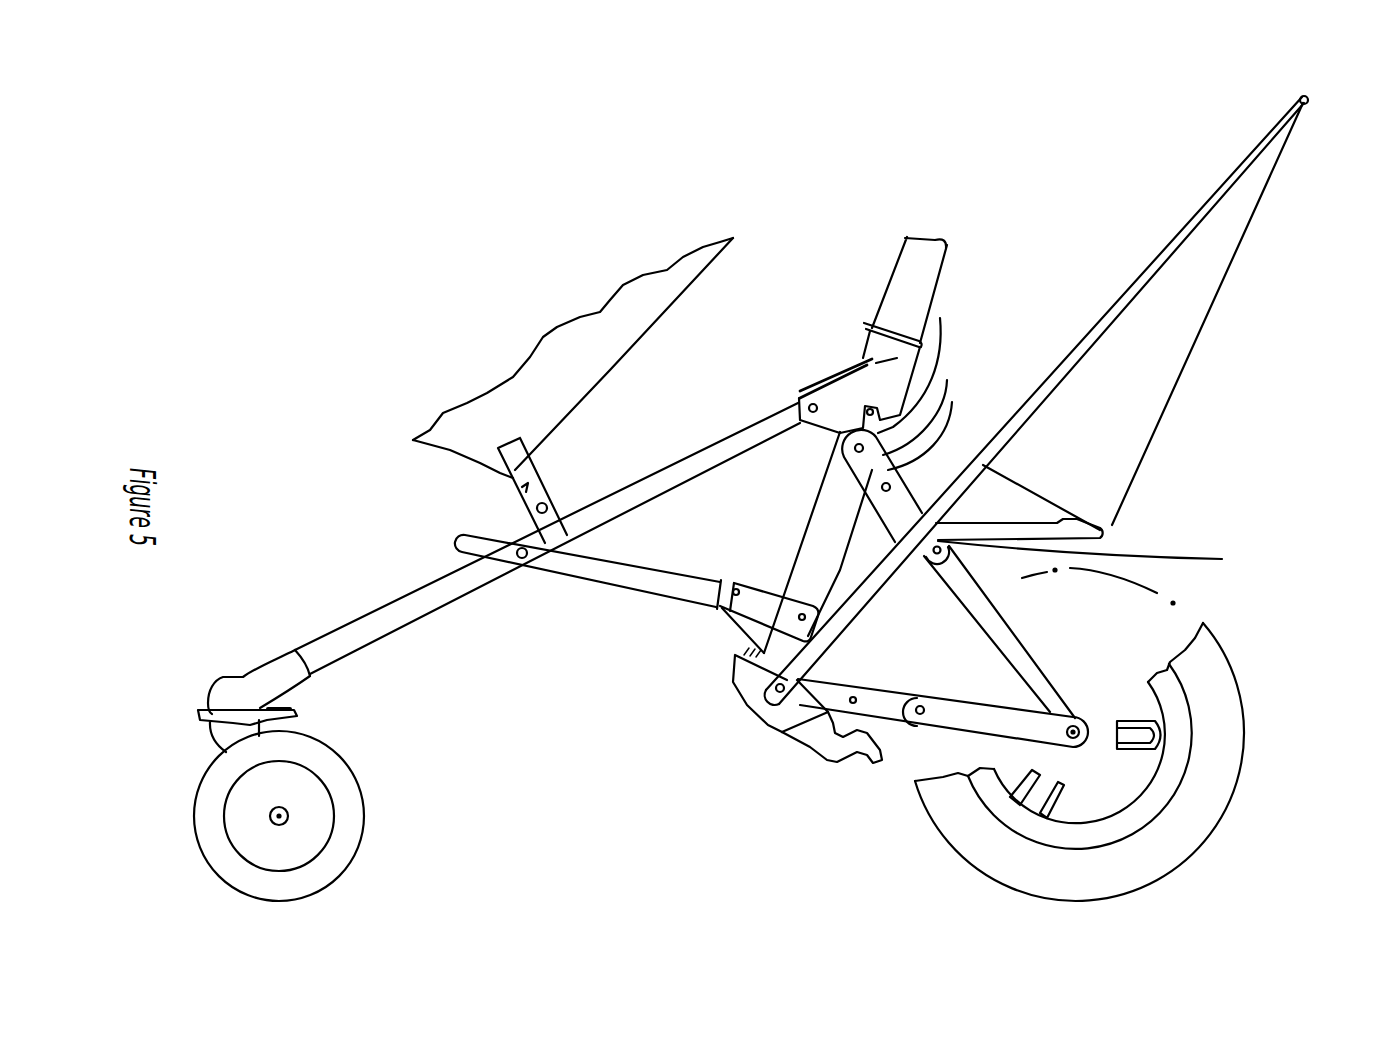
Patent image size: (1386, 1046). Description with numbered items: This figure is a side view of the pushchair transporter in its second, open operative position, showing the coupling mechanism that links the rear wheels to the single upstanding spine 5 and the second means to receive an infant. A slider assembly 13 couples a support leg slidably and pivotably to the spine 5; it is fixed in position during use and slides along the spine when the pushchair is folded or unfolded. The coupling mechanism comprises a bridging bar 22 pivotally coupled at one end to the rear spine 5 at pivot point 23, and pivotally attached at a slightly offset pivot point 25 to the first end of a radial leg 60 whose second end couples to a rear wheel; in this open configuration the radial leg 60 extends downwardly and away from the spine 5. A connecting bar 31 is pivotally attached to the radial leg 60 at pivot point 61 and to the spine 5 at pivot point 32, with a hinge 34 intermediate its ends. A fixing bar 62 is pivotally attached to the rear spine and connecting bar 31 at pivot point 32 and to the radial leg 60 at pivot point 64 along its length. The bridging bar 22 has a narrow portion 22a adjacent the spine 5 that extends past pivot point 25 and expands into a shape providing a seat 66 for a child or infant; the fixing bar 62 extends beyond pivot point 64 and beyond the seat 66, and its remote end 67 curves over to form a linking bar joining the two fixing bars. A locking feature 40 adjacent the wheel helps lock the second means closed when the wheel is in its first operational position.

The spine 5 is at (917, 256).
The slider assembly 13 is at (878, 336).
The bridging bar 22 is at (916, 461).
The narrow portion 22a is at (941, 403).
The pivot point 23 is at (929, 361).
The pivot point 25 is at (890, 486).
The connecting bar 31 is at (947, 720).
The pivot point 32 is at (768, 696).
The hinge 34 is at (918, 716).
The locking feature 40 is at (835, 737).
The radial leg 60 is at (1025, 660).
The pivot point 61 is at (1068, 740).
The fixing bar 62 is at (735, 655).
The pivot point 64 is at (1101, 573).
The seat 66 is at (1112, 526).
The end of fixing bar 67 is at (1308, 100).